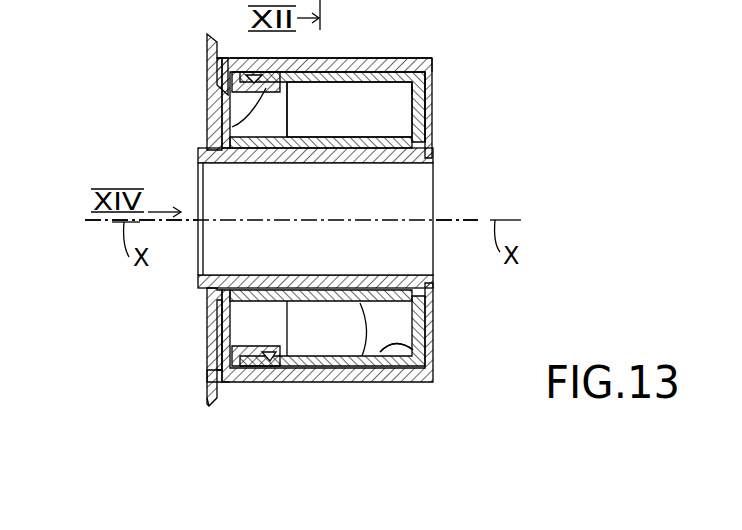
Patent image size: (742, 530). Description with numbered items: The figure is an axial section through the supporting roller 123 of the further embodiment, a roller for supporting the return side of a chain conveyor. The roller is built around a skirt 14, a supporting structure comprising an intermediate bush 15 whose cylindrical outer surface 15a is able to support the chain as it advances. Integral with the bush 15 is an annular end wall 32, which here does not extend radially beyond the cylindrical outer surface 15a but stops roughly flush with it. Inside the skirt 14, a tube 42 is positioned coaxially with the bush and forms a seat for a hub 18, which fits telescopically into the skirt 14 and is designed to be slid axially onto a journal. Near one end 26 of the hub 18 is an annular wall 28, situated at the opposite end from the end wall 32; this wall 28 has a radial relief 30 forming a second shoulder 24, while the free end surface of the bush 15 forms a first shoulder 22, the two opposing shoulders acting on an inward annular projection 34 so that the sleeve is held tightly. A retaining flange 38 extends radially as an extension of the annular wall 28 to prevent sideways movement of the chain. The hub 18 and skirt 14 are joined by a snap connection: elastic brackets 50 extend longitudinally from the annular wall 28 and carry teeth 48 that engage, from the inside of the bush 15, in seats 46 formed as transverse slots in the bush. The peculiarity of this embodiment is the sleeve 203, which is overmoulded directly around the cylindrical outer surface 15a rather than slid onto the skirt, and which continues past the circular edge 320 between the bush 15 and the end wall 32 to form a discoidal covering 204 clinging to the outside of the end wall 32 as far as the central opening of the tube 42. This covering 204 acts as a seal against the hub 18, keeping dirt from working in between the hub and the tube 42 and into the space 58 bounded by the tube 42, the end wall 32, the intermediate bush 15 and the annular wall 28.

The supporting roller 123 is at (147, 102).
The first shoulder 22 is at (230, 58).
The second shoulder 24 is at (220, 70).
The elastic bracket 50 is at (232, 127).
The hub 18 is at (200, 158).
The annular wall 28 is at (218, 312).
The tooth 48 is at (225, 350).
The inward annular projection 34 is at (225, 372).
The retaining flange 38 is at (209, 406).
The radial relief 30 is at (228, 386).
The seat 46 is at (286, 362).
The tube 42 is at (372, 384).
The intermediate bush 15 is at (425, 355).
The end wall 32 is at (428, 160).
The end of the hub 26 is at (428, 203).
The skirt 14 is at (430, 128).
The discoidal covering 204 is at (435, 104).
The circular edge 320 is at (408, 92).
The sleeve 203 is at (330, 58).
The cylindrical outer surface 15a is at (402, 58).
The space 58 is at (372, 130).